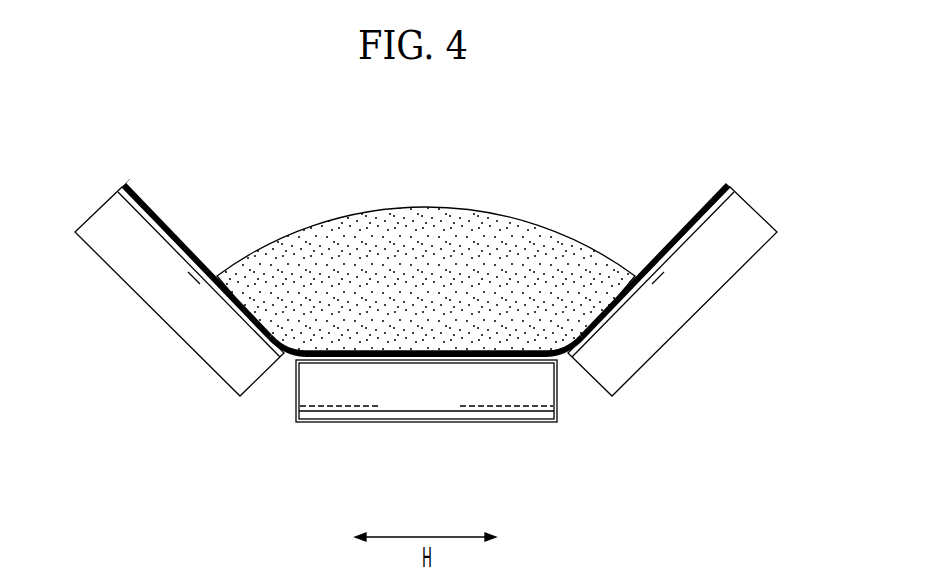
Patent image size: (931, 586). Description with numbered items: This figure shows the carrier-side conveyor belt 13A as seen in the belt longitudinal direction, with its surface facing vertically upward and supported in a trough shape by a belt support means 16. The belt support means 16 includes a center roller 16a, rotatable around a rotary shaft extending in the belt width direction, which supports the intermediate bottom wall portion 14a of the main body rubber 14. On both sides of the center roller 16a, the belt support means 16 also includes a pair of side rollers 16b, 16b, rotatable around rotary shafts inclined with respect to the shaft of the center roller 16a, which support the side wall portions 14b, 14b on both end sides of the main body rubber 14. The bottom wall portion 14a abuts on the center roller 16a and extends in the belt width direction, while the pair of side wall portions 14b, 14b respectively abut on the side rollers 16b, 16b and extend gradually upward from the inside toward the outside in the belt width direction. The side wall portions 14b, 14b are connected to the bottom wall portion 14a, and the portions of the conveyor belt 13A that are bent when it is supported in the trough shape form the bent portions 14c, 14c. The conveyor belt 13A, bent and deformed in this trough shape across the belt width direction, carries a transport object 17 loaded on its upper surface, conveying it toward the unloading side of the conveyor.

The carrier-side conveyor belt 13A is at (124, 187).
The main body rubber 14 is at (426, 288).
The bottom wall portion 14a is at (498, 348).
The side wall portion 14b is at (162, 222).
The bent portion 14c is at (291, 356).
The belt support means 16 is at (407, 338).
The center roller 16a is at (424, 397).
The side roller 16b is at (172, 329).
The transport object 17 is at (424, 227).